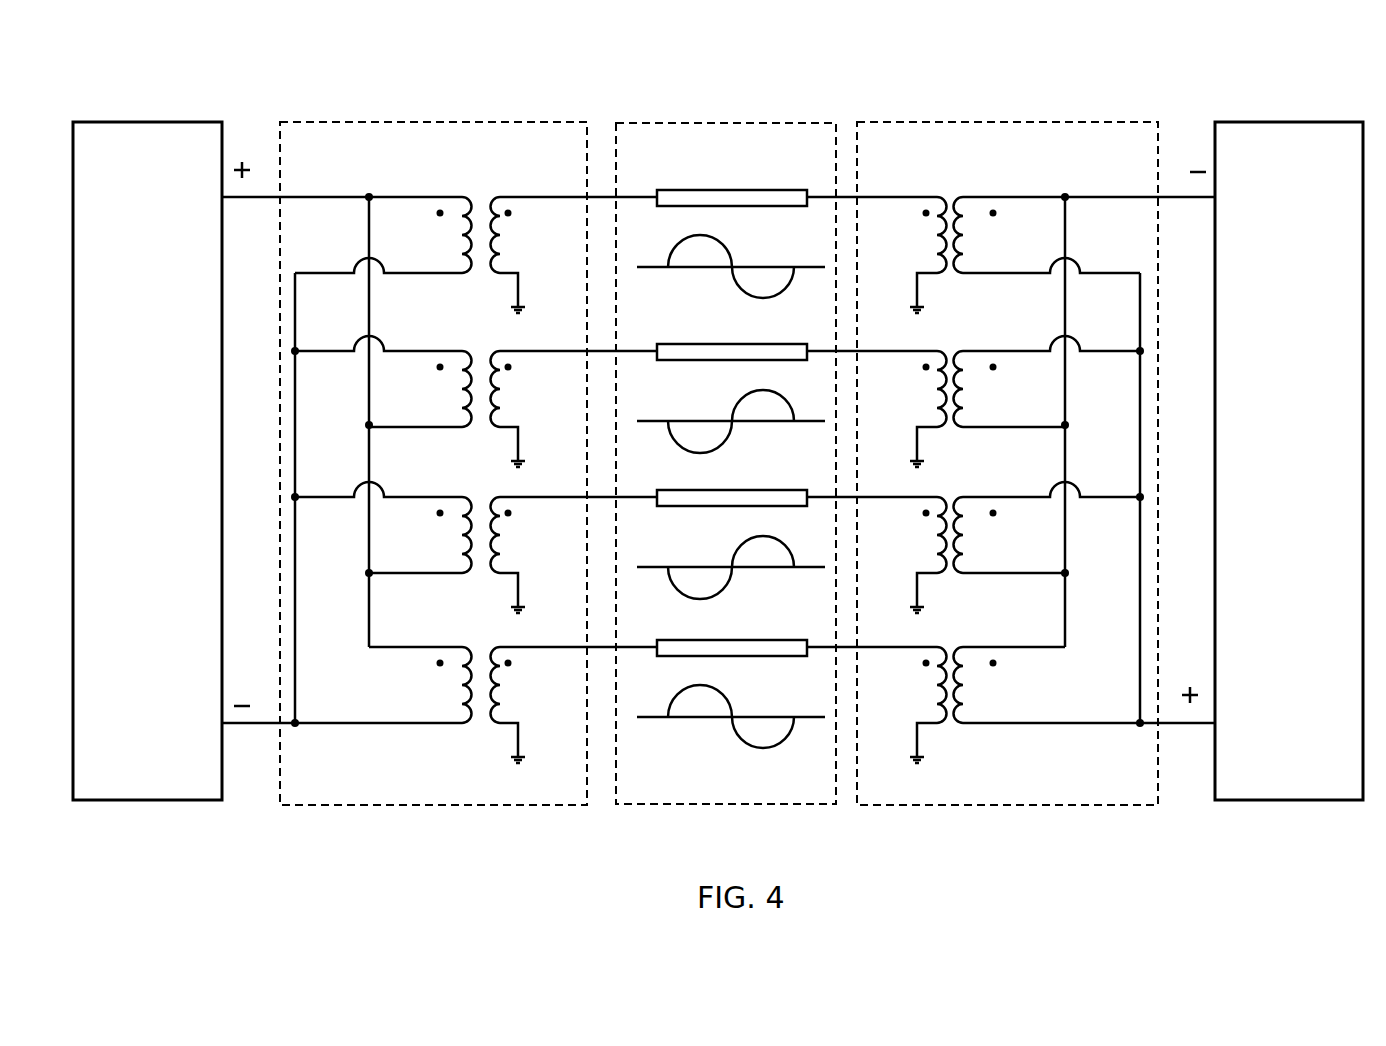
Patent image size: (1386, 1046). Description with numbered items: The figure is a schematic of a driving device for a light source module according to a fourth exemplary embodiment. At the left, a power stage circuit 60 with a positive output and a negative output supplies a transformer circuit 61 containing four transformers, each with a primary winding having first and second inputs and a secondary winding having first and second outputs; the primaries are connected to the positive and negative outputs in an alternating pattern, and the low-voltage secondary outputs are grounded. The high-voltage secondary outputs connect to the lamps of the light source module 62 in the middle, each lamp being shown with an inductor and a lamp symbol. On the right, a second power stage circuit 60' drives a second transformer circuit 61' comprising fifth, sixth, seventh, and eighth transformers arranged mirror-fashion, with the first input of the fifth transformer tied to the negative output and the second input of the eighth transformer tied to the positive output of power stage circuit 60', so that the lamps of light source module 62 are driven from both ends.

The power stage circuit 60 is at (158, 413).
The transformer circuit 61 is at (433, 415).
The light source module 62 is at (693, 120).
The transformer circuit 61' is at (1007, 415).
The power stage circuit 60' is at (1300, 413).